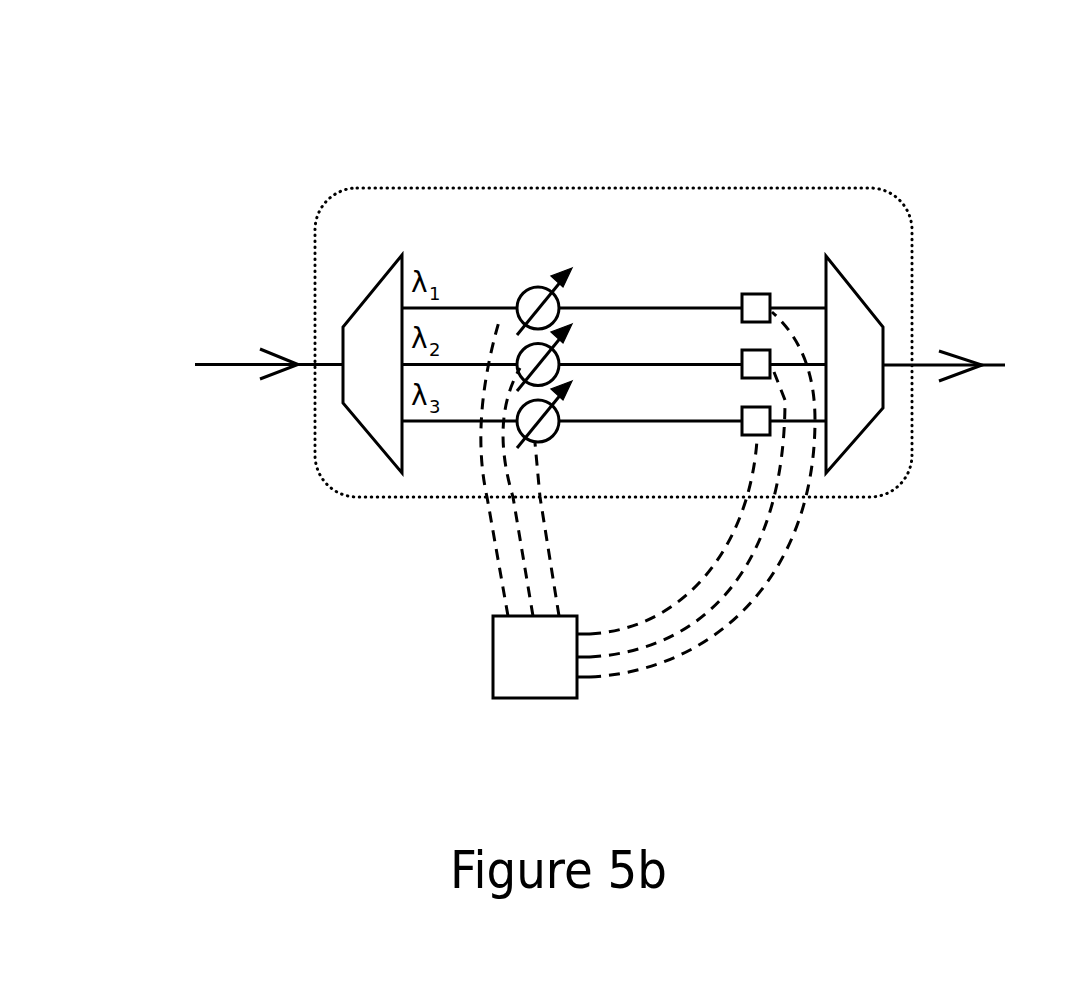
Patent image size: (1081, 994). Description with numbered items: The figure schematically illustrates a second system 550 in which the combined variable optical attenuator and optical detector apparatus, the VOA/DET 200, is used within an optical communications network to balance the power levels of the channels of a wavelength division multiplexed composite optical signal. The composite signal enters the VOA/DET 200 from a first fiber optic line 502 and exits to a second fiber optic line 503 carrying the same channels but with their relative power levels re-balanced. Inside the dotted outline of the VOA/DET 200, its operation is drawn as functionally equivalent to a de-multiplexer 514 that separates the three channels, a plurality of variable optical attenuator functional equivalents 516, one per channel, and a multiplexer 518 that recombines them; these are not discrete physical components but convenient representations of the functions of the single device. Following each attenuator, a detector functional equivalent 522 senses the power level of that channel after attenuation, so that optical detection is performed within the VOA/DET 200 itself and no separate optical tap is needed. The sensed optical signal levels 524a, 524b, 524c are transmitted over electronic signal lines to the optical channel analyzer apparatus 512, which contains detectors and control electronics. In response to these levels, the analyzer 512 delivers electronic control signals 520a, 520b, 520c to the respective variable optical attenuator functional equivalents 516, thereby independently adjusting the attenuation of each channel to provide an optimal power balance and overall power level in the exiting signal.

The second system 550 is at (303, 54).
The VOA/DET 200 is at (503, 189).
The first fiber optic line 502 is at (251, 363).
The second fiber optic line 503 is at (984, 364).
The de-multiplexer 514 is at (401, 260).
The multiplexer 518 is at (829, 261).
The variable optical attenuator functional equivalents 516 is at (527, 290).
The detector functional equivalents 522 is at (742, 300).
The optical channel analyzer apparatus 512 is at (493, 690).
The electronic control signal 520a is at (507, 587).
The electronic control signal 520b is at (448, 492).
The electronic control signal 520c is at (560, 584).
The sensed optical signal level 524a is at (658, 664).
The sensed optical signal level 524b is at (688, 537).
The sensed optical signal level 524c is at (713, 540).